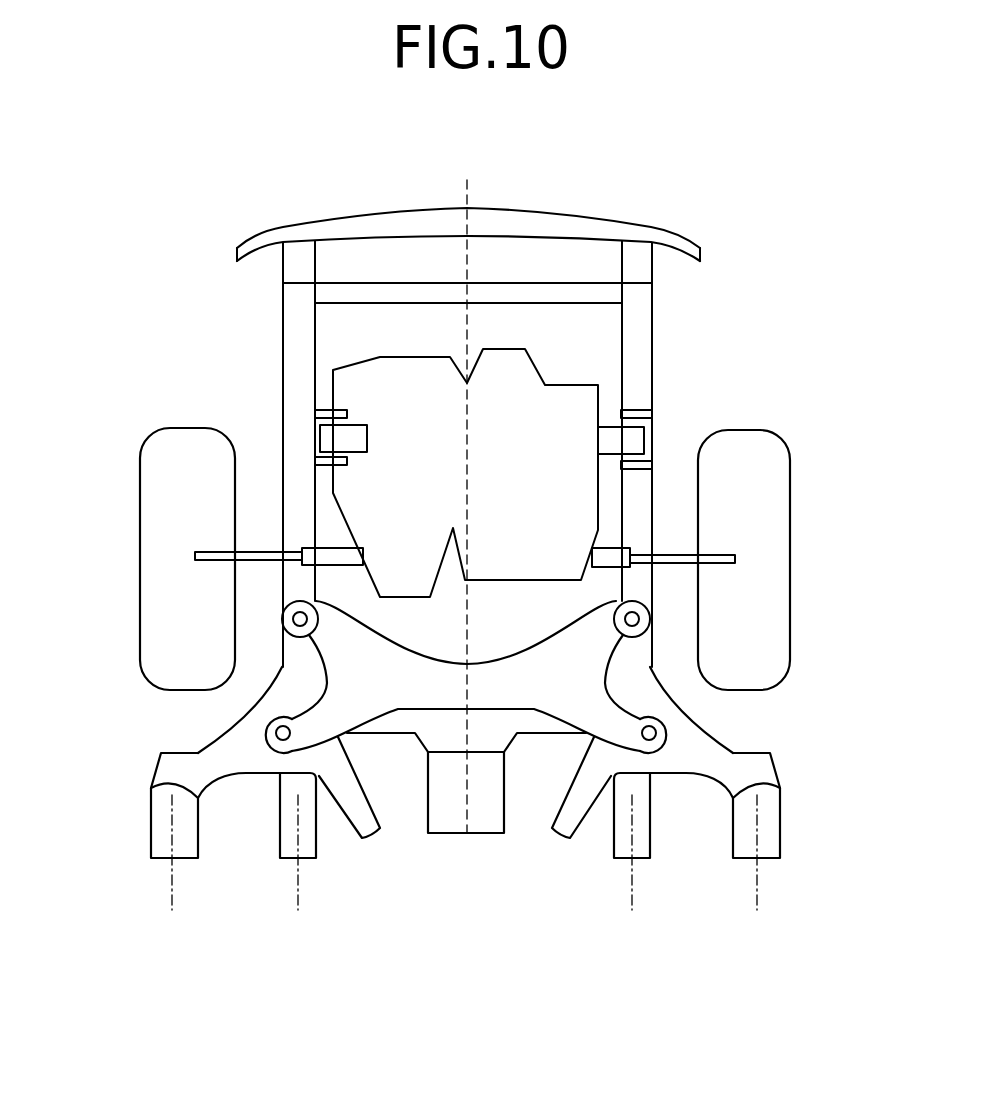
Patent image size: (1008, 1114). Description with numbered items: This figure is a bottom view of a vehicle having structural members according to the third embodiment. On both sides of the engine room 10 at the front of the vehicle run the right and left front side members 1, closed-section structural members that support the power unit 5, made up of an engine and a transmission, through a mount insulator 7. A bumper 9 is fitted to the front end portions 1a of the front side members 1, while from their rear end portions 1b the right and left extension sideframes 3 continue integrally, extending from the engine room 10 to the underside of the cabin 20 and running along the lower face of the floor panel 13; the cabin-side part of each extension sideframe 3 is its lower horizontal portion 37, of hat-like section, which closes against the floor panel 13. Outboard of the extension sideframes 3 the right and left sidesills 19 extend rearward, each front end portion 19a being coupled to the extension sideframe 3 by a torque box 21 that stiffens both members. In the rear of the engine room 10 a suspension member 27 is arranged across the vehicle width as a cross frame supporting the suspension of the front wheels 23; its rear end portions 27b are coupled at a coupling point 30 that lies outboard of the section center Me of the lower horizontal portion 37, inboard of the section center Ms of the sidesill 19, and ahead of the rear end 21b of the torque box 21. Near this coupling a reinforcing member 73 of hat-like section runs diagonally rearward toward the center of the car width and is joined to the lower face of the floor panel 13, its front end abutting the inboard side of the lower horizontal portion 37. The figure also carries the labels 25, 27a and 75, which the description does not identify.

The front side member 1 is at (282, 322).
The front end portion 1a is at (302, 240).
The rear end portion 1b is at (283, 517).
The extension sideframe 3 is at (286, 682).
The power unit 5 is at (569, 385).
The mount insulator 7 is at (320, 437).
The bumper 9 is at (563, 218).
The engine room 10 is at (398, 341).
The floor panel 13 is at (535, 740).
The sidesill 19 is at (163, 845).
The front end portion 19a is at (163, 752).
The cabin 20 is at (420, 887).
The torque box 21 is at (222, 773).
The rear end 21b is at (149, 788).
The front wheel 23 is at (140, 505).
The suspension assembly 25 is at (192, 730).
The suspension member 27 is at (425, 682).
The upper pivot 27a is at (290, 603).
The rear end portion 27b is at (265, 752).
The coupling point 30 is at (266, 720).
The lower horizontal portion 37 is at (312, 797).
The reinforcing member 73 is at (355, 787).
The central support 75 is at (452, 824).
The center of a section of the sidesill Ms is at (463, 879).
The center of a section of the extension sideframe Me is at (464, 879).